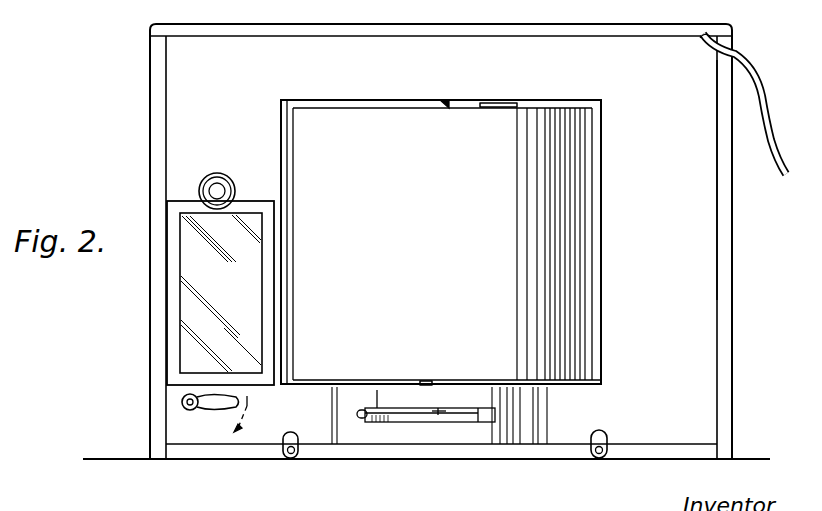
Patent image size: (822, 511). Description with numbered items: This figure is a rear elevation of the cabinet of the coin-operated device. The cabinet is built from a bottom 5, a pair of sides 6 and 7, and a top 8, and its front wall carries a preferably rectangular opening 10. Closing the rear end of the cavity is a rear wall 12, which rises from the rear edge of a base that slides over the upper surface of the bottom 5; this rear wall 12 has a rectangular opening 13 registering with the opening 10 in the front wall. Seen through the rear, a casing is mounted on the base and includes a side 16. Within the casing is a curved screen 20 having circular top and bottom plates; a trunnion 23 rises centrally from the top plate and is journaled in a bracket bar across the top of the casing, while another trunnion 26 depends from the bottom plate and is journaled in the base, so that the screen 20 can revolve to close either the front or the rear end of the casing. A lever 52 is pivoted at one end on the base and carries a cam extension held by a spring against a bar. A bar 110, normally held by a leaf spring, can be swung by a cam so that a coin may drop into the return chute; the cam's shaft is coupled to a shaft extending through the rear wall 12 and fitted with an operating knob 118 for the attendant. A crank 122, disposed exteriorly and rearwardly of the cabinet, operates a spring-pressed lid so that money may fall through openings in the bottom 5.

The bottom 5 is at (278, 457).
The side 6 is at (722, 208).
The side 7 is at (158, 101).
The top 8 is at (440, 13).
The opening 10 is at (182, 402).
The rear wall 12 is at (681, 180).
The rectangular opening 13 is at (548, 99).
The side 16 is at (252, 401).
The curved screen 20 is at (441, 242).
The trunnion 23 is at (448, 101).
The trunnion 26 is at (436, 383).
The lever 52 is at (387, 422).
The bar 110 is at (220, 293).
The operating knob 118 is at (222, 172).
The crank 122 is at (228, 404).